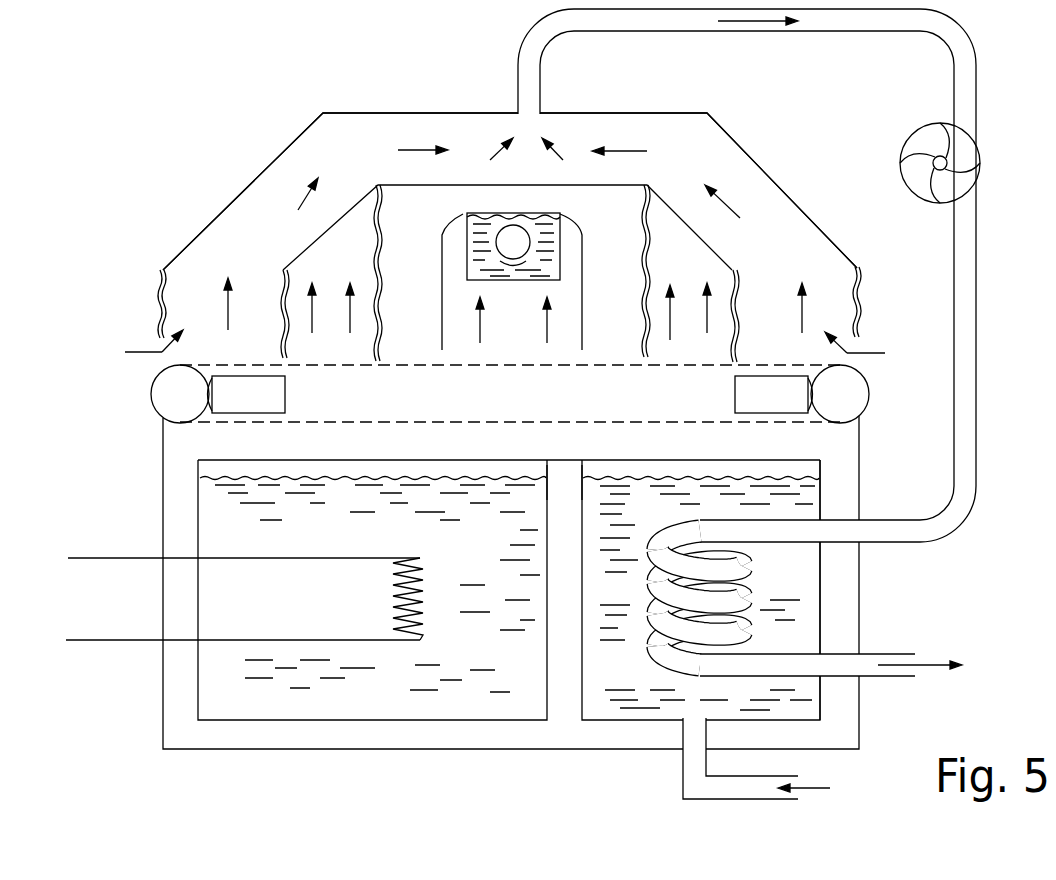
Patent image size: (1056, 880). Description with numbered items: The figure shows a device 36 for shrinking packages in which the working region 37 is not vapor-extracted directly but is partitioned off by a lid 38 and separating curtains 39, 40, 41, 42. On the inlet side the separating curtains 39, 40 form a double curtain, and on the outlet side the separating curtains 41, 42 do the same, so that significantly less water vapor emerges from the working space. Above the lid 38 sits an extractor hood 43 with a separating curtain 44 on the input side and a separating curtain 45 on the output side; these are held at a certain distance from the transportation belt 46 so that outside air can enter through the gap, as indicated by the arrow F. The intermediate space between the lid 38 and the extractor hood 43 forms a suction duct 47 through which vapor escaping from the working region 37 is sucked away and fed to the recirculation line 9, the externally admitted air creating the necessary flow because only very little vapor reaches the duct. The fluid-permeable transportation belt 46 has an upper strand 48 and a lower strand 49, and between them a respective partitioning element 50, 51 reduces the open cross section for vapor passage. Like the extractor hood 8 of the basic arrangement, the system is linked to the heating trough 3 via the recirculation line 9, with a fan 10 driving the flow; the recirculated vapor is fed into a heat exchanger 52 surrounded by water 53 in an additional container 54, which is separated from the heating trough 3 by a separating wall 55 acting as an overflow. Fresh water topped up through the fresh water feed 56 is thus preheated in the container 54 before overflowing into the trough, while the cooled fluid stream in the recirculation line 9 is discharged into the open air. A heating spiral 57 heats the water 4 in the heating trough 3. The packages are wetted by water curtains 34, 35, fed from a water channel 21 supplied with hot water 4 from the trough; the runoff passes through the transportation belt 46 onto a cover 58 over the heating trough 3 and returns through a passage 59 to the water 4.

The heating trough 3 is at (392, 705).
The water 4 is at (516, 552).
The extractor hood 8 is at (672, 135).
The recirculation line 9 is at (822, 22).
The fan 10 is at (963, 153).
The water channel 21 is at (469, 203).
The water curtain 34 is at (441, 280).
The water curtain 35 is at (583, 278).
The device 36 is at (229, 119).
The working region 37 is at (592, 226).
The lid 38 is at (503, 185).
The separating curtain 39 is at (283, 318).
The separating curtain 40 is at (375, 266).
The separating curtain 41 is at (648, 266).
The separating curtain 42 is at (737, 305).
The extractor hood 43 is at (383, 113).
The separating curtain 44 is at (160, 303).
The separating curtain 45 is at (860, 298).
The transportation belt 46 is at (491, 372).
The suction duct 47 is at (467, 148).
The upper strand 48 is at (545, 368).
The lower strand 49 is at (665, 417).
The partitioning element 50 is at (270, 396).
The partitioning element 51 is at (745, 396).
The heat exchanger 52 is at (648, 622).
The water 53 is at (803, 598).
The additional container 54 is at (810, 622).
The separating wall 55 is at (565, 500).
The fresh water feed 56 is at (683, 773).
The heating spiral 57 is at (390, 598).
The cover 58 is at (385, 460).
The passage 59 is at (510, 460).
The arrow F is at (862, 358).